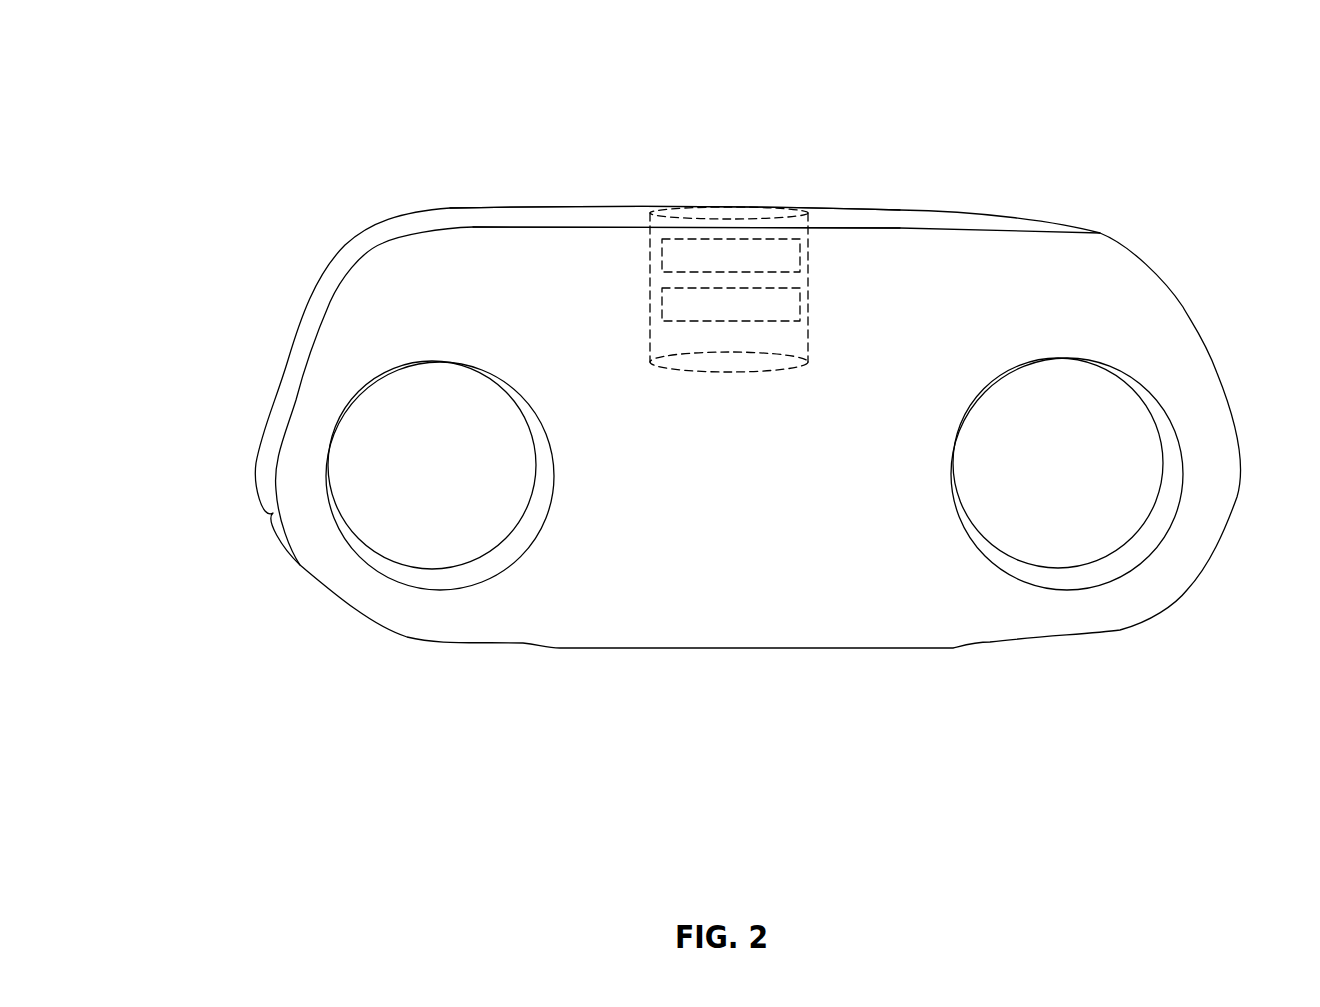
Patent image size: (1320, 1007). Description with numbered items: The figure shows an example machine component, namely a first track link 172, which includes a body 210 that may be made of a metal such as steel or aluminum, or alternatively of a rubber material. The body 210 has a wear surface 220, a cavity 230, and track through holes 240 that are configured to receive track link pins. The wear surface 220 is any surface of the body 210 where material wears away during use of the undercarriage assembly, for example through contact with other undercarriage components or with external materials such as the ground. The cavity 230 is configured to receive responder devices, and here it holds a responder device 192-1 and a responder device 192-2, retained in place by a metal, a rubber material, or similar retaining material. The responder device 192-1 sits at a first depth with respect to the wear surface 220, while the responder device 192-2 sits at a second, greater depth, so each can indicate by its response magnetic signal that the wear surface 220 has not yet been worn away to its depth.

The first track link 172 is at (227, 51).
The body 210 is at (316, 371).
The wear surface 220 is at (578, 215).
The cavity 230 is at (658, 349).
The responder device 192-1 is at (792, 253).
The responder device 192-2 is at (792, 305).
The track through holes 240 is at (351, 490).